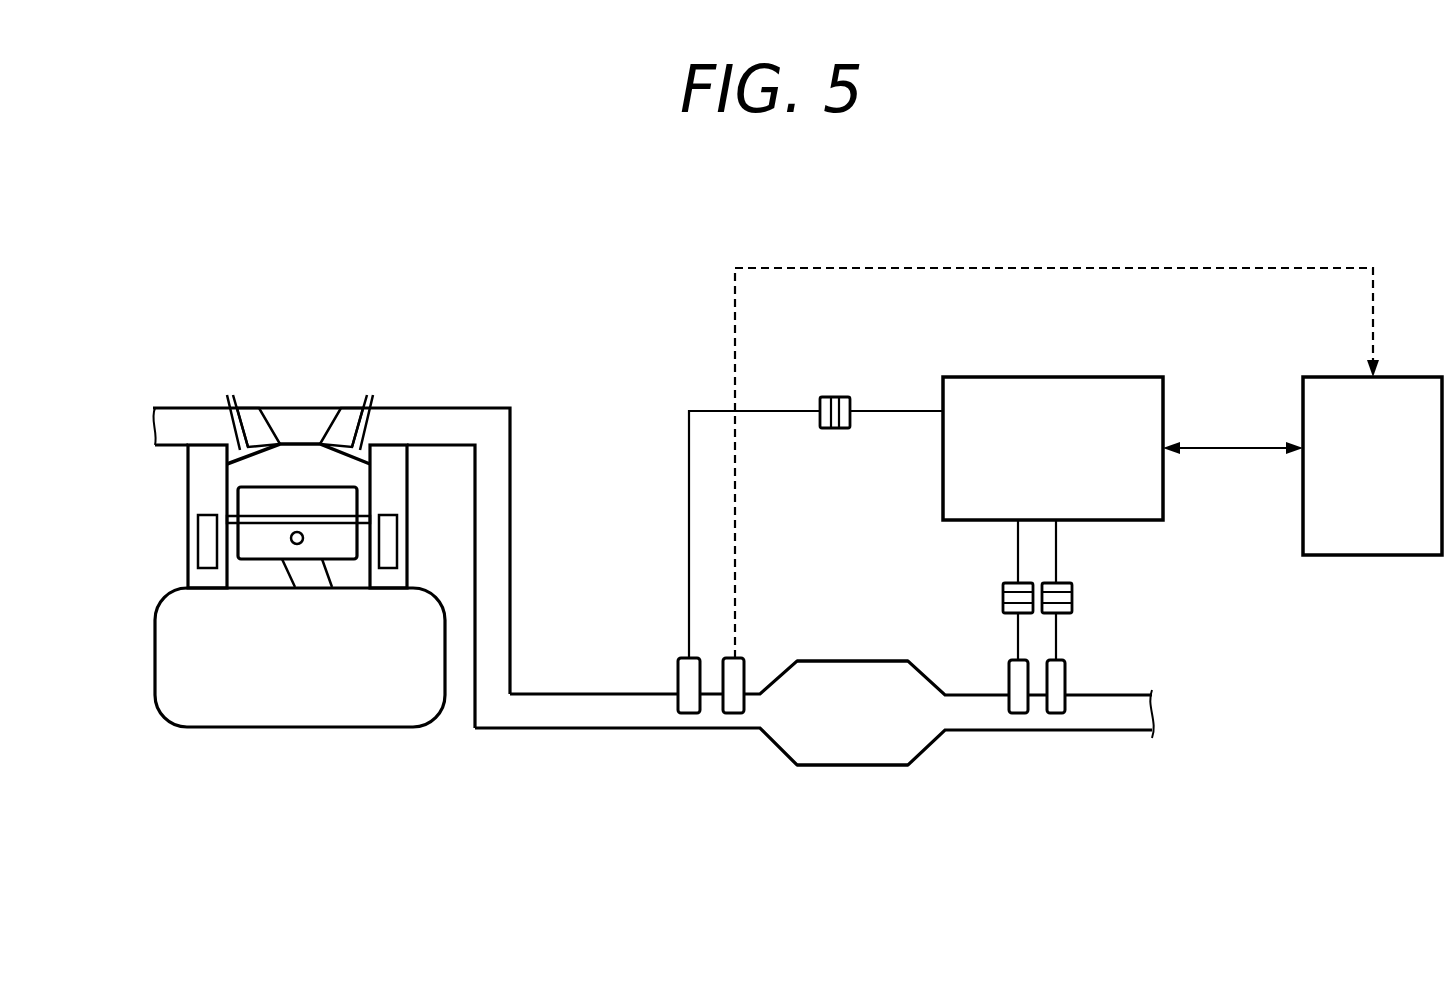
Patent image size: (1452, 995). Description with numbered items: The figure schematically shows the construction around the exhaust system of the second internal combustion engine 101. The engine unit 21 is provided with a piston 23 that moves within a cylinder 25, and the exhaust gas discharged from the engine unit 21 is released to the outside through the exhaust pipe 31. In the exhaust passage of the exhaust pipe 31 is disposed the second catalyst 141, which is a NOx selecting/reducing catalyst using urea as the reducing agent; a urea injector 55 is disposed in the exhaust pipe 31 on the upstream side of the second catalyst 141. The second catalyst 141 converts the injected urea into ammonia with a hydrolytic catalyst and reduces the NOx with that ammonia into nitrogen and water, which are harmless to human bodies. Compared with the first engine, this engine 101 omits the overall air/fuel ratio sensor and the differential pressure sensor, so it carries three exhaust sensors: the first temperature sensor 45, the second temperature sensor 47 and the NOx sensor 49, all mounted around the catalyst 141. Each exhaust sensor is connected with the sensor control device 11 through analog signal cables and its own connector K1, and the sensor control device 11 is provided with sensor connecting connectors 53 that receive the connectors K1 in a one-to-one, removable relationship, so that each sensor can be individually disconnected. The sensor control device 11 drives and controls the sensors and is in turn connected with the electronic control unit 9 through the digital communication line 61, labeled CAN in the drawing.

The second internal combustion engine 101 is at (624, 266).
The engine unit 21 is at (304, 755).
The cylinder 25 is at (197, 488).
The piston 23 is at (255, 552).
The exhaust pipe 31 is at (548, 730).
The second catalyst 141 is at (857, 765).
The first temperature sensor 45 is at (680, 683).
The urea injector 55 is at (732, 705).
The second temperature sensor 47 is at (1018, 713).
The NOx sensor 49 is at (1055, 705).
The sensor connecting connector 53 is at (840, 397).
The connector K1 is at (827, 428).
The sensor control device 11 is at (1075, 390).
The electronic control unit 9 is at (1413, 390).
The digital communication line 61 is at (1235, 442).